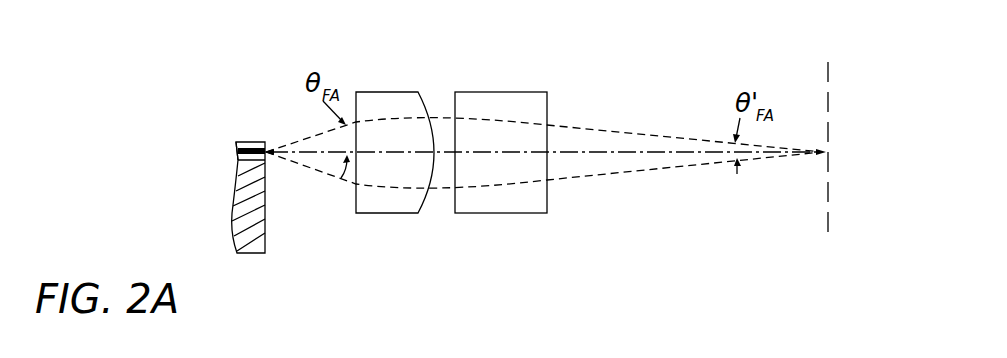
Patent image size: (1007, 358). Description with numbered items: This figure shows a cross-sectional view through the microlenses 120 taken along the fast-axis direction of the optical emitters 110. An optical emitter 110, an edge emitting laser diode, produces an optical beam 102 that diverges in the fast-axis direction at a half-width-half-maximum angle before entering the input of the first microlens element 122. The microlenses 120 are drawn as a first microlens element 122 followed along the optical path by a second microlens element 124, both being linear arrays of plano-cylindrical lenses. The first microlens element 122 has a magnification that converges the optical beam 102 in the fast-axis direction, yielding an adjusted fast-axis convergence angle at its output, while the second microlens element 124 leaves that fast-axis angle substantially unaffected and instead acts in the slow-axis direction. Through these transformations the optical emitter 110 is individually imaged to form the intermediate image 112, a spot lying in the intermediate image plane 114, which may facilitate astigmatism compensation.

The optical emitter 110 is at (252, 140).
The first microlens element 122 is at (402, 92).
The second microlens element 124 is at (501, 92).
The optical beam 102 is at (520, 169).
The microlenses 120 is at (421, 237).
The intermediate image 112 is at (808, 165).
The intermediate image plane 114 is at (828, 213).